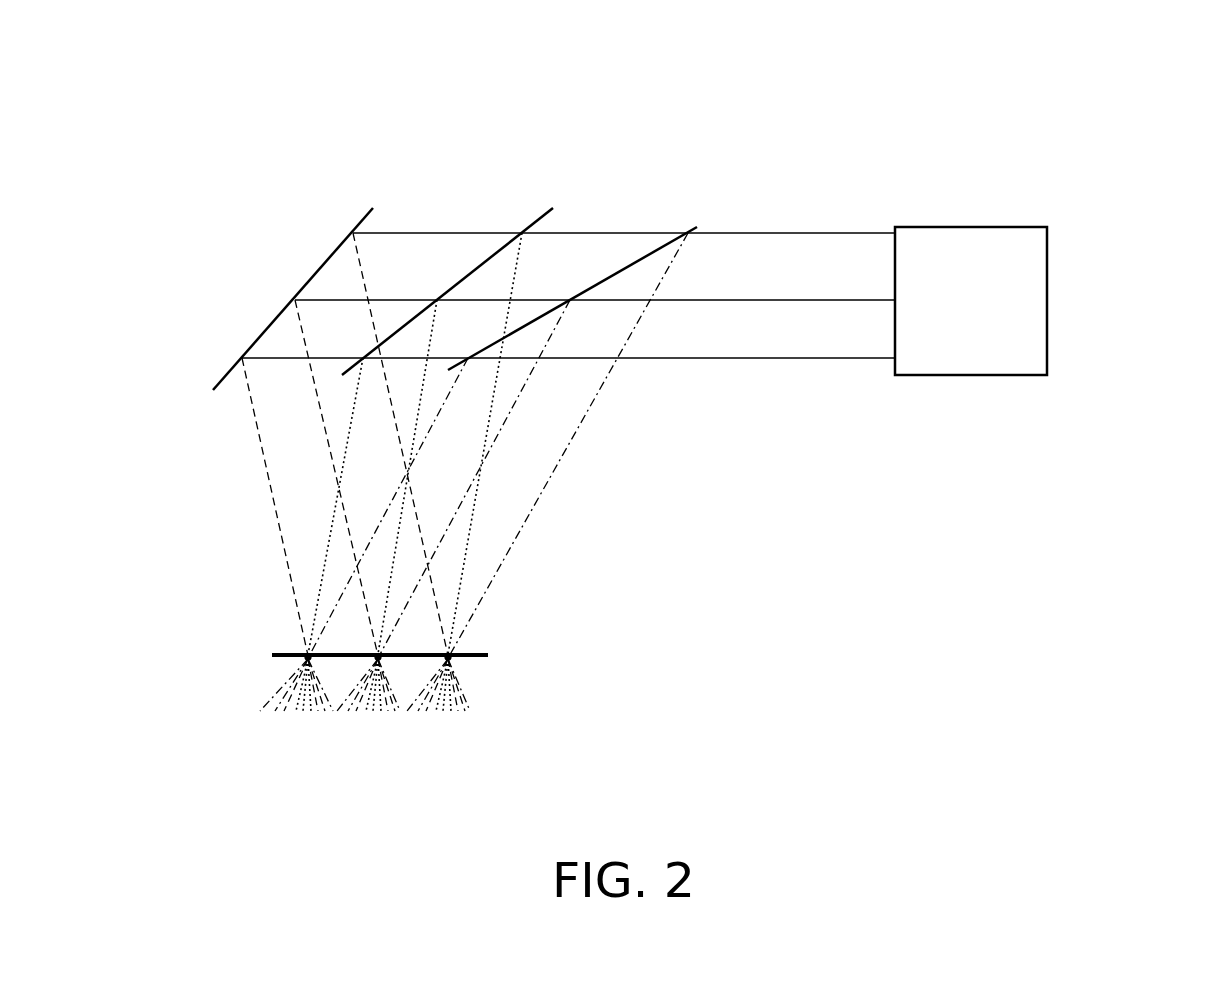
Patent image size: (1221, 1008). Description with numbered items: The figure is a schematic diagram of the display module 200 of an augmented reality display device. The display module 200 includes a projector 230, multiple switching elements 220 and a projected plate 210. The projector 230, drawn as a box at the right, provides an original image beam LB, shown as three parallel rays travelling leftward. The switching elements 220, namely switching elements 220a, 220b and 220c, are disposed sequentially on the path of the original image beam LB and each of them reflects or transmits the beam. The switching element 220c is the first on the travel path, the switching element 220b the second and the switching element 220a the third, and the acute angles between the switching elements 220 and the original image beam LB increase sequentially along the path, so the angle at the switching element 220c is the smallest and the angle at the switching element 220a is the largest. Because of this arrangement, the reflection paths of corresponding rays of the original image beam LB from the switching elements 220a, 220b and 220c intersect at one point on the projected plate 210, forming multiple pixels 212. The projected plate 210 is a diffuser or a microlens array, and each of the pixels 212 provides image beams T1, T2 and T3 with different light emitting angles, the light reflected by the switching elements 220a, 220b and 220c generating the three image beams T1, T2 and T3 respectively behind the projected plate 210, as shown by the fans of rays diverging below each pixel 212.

The display module 200 is at (188, 55).
The projected plate 210 is at (485, 657).
The pixels 212 is at (310, 659).
The switching elements 220 is at (478, 379).
The switching element 220a is at (368, 212).
The switching element 220b is at (538, 218).
The switching element 220c is at (652, 252).
The projector 230 is at (1008, 308).
The original image beam LB is at (767, 358).
The image beam T1 is at (325, 713).
The image beam T2 is at (303, 713).
The image beam T3 is at (278, 708).